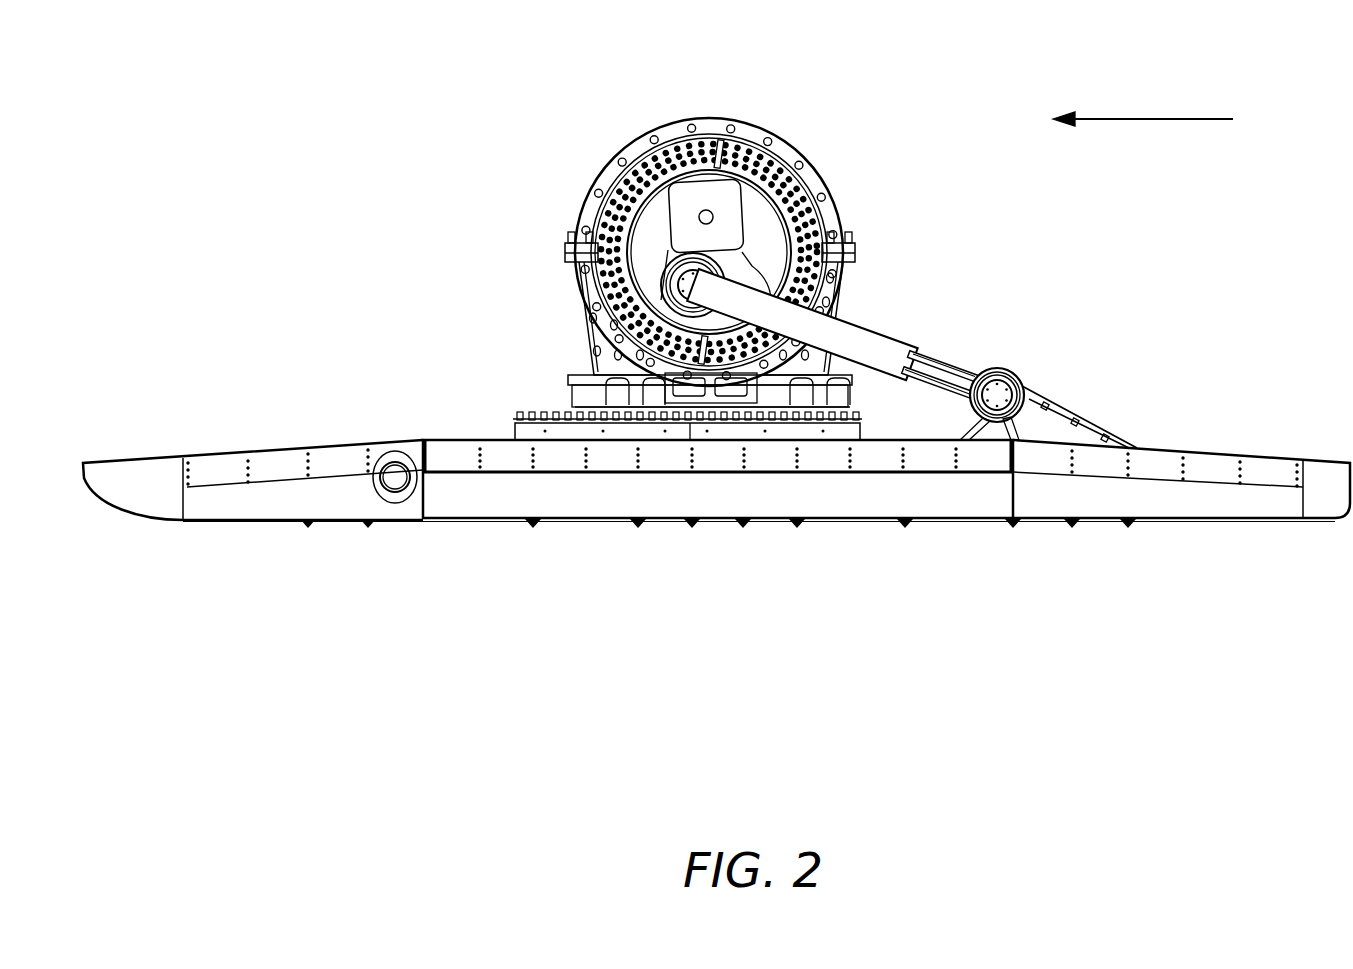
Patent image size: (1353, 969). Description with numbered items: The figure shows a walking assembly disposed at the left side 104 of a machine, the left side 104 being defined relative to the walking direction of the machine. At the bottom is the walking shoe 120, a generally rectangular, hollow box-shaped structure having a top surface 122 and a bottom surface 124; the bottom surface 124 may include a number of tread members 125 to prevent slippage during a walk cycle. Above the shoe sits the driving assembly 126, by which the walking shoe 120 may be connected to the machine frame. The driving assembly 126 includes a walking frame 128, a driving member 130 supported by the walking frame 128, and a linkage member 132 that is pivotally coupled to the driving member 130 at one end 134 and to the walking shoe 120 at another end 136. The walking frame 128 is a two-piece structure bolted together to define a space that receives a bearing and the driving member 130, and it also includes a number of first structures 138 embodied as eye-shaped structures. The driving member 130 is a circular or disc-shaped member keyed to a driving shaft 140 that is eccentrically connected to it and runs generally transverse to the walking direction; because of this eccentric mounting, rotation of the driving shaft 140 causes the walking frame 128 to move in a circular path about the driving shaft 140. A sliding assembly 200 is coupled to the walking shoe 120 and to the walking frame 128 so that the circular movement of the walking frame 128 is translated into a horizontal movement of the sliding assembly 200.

The left side 104 is at (1092, 232).
The walking shoe 120 is at (477, 497).
The top surface 122 is at (1217, 452).
The bottom surface 124 is at (1213, 521).
The tread members 125 is at (1128, 527).
The driving assembly 126 is at (870, 205).
The walking frame 128 is at (597, 182).
The driving member 130 is at (655, 252).
The linkage member 132 is at (883, 350).
The one end 134 is at (644, 275).
The another end 136 is at (1038, 359).
The first structures 138 is at (670, 373).
The driving shaft 140 is at (698, 197).
The sliding assembly 200 is at (503, 421).